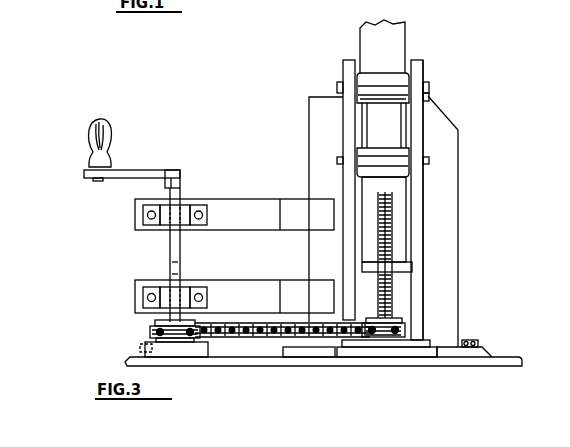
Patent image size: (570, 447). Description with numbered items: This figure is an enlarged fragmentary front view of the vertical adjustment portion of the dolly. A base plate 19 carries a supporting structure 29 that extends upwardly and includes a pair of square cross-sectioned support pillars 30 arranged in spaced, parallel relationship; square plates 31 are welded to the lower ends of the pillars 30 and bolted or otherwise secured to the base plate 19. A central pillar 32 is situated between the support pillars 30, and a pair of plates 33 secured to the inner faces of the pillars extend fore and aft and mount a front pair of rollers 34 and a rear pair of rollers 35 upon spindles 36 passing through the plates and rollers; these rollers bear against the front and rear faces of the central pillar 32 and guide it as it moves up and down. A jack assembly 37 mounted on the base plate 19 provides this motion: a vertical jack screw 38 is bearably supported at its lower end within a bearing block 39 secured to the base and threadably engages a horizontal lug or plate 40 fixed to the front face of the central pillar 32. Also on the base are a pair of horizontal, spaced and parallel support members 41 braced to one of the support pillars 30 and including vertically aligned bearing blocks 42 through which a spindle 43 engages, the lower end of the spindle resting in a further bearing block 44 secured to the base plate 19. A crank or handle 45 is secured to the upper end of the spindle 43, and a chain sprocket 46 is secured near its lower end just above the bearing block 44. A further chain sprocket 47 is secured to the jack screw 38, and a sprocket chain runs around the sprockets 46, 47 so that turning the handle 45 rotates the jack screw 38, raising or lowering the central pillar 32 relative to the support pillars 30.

The base plate 19 is at (468, 366).
The supporting structure 29 is at (309, 120).
The support pillars 30 is at (452, 182).
The square plates 31 is at (476, 338).
The central pillar 32 is at (403, 42).
The plates 33 is at (343, 70).
The front pair of rollers 34 is at (391, 158).
The rear pair of rollers 35 is at (378, 82).
The spindles 36 is at (429, 90).
The jack assembly 37 is at (208, 348).
The jack screw 38 is at (394, 292).
The bearing block 39 is at (372, 352).
The lug or plate 40 is at (410, 266).
The support members 41 is at (262, 204).
The bearing blocks 42 is at (166, 232).
The spindle 43 is at (170, 268).
The further bearing block 44 is at (148, 348).
The crank or handle 45 is at (166, 176).
The chain sprocket 46 is at (150, 328).
The further chain sprocket 47 is at (420, 322).